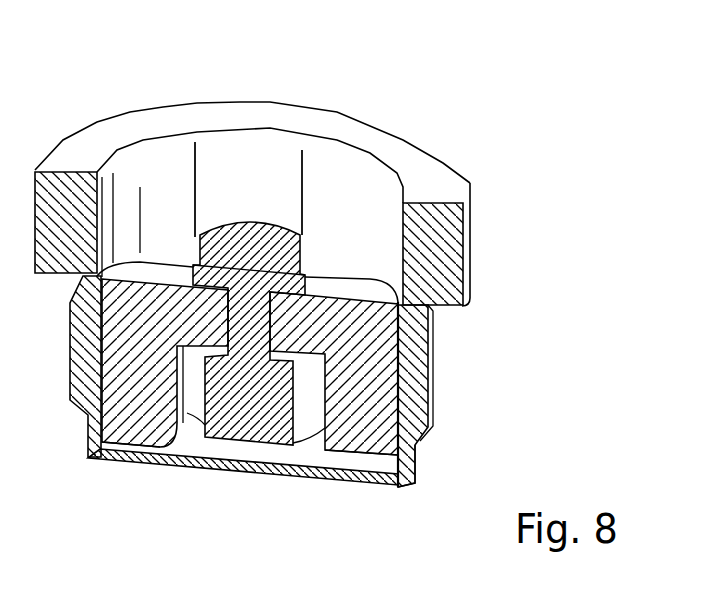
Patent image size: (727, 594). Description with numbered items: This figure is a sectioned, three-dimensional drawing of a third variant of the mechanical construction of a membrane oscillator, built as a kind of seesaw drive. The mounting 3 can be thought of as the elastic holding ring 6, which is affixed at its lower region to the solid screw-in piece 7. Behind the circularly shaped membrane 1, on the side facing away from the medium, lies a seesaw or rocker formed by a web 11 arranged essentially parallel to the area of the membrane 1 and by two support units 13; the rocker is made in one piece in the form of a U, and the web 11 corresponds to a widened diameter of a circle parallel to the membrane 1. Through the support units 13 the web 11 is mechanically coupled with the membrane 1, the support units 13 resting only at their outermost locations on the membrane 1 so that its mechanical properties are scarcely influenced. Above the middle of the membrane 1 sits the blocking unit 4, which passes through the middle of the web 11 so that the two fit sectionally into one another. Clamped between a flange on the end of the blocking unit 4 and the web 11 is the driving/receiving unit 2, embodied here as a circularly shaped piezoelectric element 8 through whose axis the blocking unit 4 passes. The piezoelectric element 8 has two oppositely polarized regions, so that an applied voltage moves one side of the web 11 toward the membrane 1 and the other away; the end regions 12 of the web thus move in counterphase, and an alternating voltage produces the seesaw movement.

The membrane 1 is at (313, 473).
The driving/receiving unit 2 is at (323, 276).
The mounting 3 is at (433, 390).
The blocking unit 4 is at (250, 430).
The elastic holding ring 6 is at (417, 456).
The screw-in piece 7 is at (472, 253).
The piezoelectric element 8 is at (248, 189).
The web 11 is at (178, 267).
The end regions of the web 12 is at (160, 277).
The support units 13 is at (140, 447).